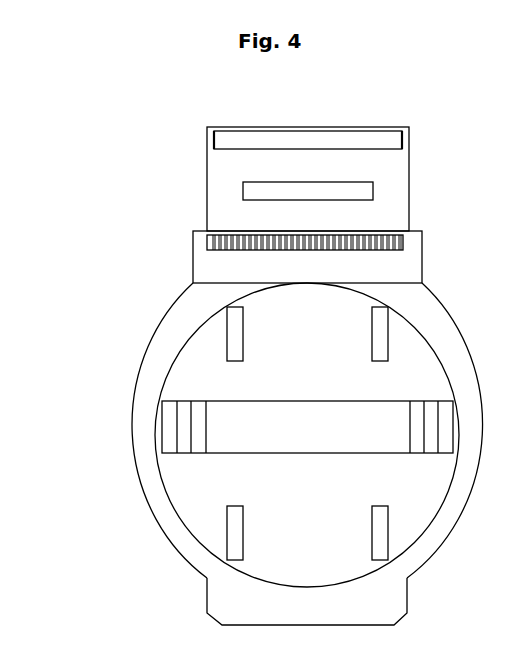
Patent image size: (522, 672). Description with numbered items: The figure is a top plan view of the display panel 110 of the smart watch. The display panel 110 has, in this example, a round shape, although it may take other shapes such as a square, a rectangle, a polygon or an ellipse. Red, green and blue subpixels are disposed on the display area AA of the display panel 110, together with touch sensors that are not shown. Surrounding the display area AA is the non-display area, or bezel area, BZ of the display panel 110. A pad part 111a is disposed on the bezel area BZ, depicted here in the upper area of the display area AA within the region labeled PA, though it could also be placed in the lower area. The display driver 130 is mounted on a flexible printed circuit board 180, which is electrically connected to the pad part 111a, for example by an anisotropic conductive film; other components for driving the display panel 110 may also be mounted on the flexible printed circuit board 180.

The flexible printed circuit board 180 is at (408, 163).
The display driver 130 is at (373, 189).
The pad part 111a is at (207, 242).
The peripheral area PA is at (193, 272).
The non-display area BZ is at (173, 325).
The display panel 110 is at (133, 429).
The display area AA is at (184, 497).